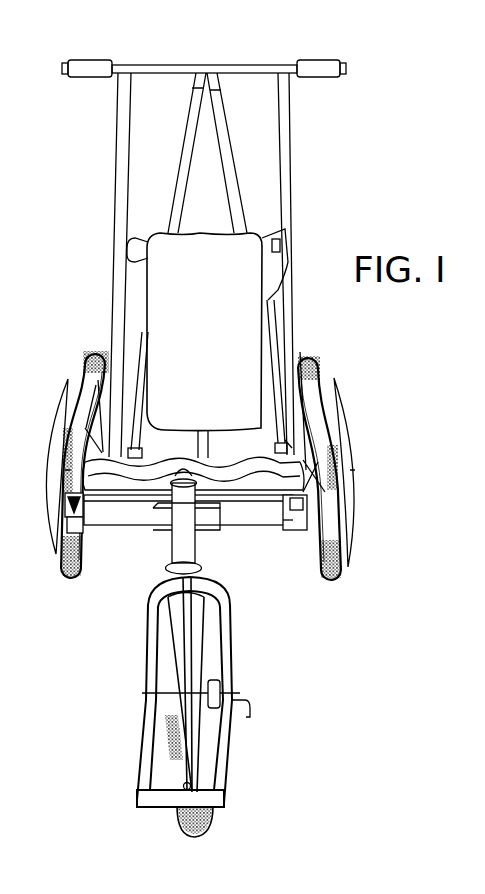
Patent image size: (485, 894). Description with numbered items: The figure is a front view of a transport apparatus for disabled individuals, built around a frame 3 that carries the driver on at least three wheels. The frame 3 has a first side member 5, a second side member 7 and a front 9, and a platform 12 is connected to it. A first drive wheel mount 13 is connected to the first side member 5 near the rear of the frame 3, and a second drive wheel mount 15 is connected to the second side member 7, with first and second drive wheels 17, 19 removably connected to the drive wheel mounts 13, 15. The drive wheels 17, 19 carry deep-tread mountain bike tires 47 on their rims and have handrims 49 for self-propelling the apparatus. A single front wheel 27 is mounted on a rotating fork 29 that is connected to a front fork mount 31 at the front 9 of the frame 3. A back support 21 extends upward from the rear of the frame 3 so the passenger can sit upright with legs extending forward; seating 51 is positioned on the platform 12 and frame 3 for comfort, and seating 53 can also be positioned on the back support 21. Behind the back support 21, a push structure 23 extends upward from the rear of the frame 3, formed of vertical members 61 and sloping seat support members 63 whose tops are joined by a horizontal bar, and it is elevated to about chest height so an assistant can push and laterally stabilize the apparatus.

The frame 3 is at (107, 540).
The first side member 5 is at (290, 524).
The second side member 7 is at (52, 532).
The front 9 is at (208, 528).
The platform 12 is at (250, 513).
The first drive wheel mount 13 is at (320, 520).
The second drive wheel mount 15 is at (108, 452).
The first drive wheel 17 is at (320, 360).
The second drive wheel 19 is at (80, 361).
The back support 21 is at (280, 306).
The push structure 23 is at (249, 61).
The front wheel 27 is at (213, 830).
The fork 29 is at (163, 683).
The front fork mount 31 is at (173, 538).
The deep-tread mountain bike tires 47 is at (83, 437).
The handrims 49 is at (53, 422).
The seating 51 is at (285, 445).
The seating 53 is at (262, 278).
The vertical members 61 is at (188, 147).
The sloping seat support members 63 is at (118, 111).